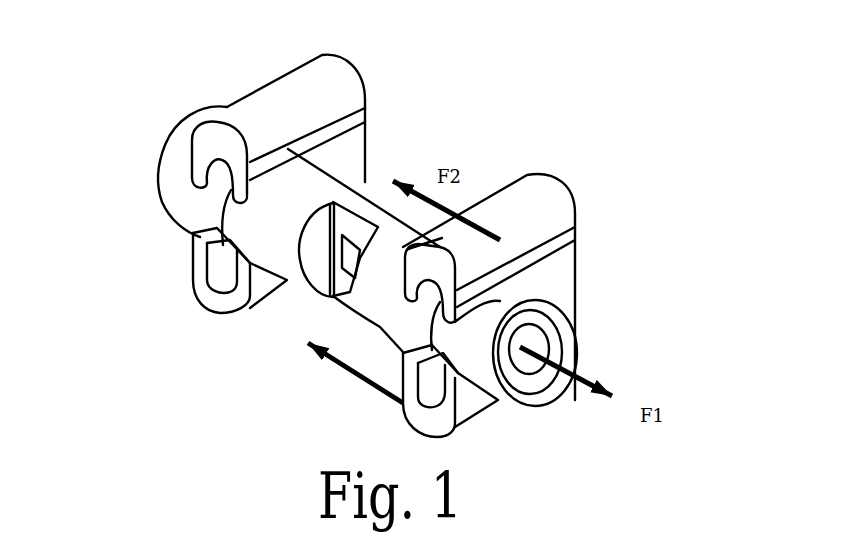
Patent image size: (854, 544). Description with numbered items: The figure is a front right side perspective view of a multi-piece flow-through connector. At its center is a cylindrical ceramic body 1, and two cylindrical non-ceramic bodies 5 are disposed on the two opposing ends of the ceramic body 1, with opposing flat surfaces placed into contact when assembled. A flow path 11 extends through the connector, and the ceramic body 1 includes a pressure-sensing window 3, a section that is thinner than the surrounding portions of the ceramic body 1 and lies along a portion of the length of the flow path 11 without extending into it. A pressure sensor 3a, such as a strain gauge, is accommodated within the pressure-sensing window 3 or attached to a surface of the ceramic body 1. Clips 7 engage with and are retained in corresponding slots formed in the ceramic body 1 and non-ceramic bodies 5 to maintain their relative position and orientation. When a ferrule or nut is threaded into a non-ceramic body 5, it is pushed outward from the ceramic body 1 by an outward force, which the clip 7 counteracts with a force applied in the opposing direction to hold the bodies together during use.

The ceramic body 1 is at (337, 183).
The pressure-sensing window 3 is at (331, 282).
The pressure sensor 3a is at (350, 262).
The non-ceramic body 5 is at (173, 150).
The clip 7 is at (320, 90).
The flow path 11 is at (540, 332).